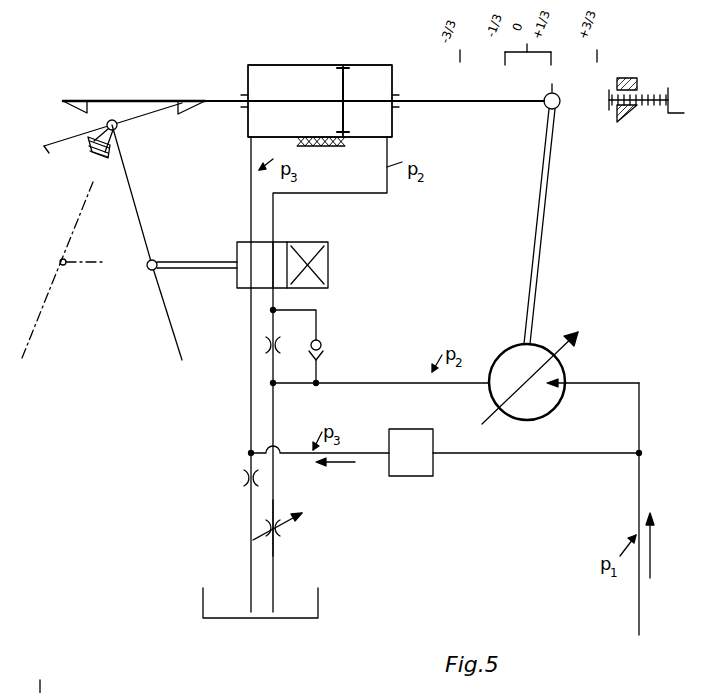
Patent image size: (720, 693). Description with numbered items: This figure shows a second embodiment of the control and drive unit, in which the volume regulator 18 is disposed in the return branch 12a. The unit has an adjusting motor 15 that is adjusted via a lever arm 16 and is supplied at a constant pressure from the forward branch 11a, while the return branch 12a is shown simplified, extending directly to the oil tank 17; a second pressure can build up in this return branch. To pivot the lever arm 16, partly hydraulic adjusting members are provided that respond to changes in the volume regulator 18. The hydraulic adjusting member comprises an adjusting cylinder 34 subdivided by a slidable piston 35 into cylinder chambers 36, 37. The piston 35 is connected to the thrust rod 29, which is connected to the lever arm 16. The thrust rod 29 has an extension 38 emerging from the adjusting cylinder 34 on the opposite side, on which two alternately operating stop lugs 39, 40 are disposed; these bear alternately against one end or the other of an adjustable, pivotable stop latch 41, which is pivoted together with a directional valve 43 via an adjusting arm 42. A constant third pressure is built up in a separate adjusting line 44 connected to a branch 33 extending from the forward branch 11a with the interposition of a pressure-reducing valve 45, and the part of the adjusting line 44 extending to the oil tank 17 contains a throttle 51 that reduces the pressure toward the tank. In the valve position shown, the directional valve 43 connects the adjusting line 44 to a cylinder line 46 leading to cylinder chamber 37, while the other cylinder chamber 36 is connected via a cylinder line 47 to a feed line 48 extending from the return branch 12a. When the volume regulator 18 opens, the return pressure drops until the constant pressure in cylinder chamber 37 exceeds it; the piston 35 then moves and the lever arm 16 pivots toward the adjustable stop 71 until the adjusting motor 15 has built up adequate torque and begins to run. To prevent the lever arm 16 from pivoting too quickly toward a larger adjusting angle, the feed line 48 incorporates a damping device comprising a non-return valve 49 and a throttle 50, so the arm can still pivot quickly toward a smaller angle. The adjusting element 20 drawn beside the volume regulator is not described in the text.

The forward branch 11a is at (638, 478).
The return branch 12a is at (405, 382).
The adjusting motor 15 is at (562, 367).
The lever arm 16 is at (545, 252).
The oil tank 17 is at (319, 607).
The volume regulator 18 is at (285, 531).
The throttle adjustment 20 is at (285, 512).
The thrust rod 29 is at (437, 100).
The branch 33 is at (511, 454).
The adjusting cylinder 34 is at (289, 64).
The piston 35 is at (345, 80).
The cylinder chamber 36 is at (372, 82).
The cylinder chamber 37 is at (262, 86).
The extension 38 is at (115, 100).
The stop lug 39 is at (82, 100).
The stop lug 40 is at (186, 100).
The stop latch 41 is at (59, 140).
The adjusting arm 42 is at (141, 222).
The directional valve 43 is at (243, 285).
The adjusting line 44 is at (247, 413).
The pressure-reducing valve 45 is at (413, 470).
The cylinder line 46 is at (252, 187).
The cylinder line 47 is at (347, 194).
The feed line 48 is at (273, 300).
The non-return valve 49 is at (323, 343).
The throttle 50 is at (266, 348).
The throttle 51 is at (245, 478).
The adjustable stop 71 is at (636, 84).